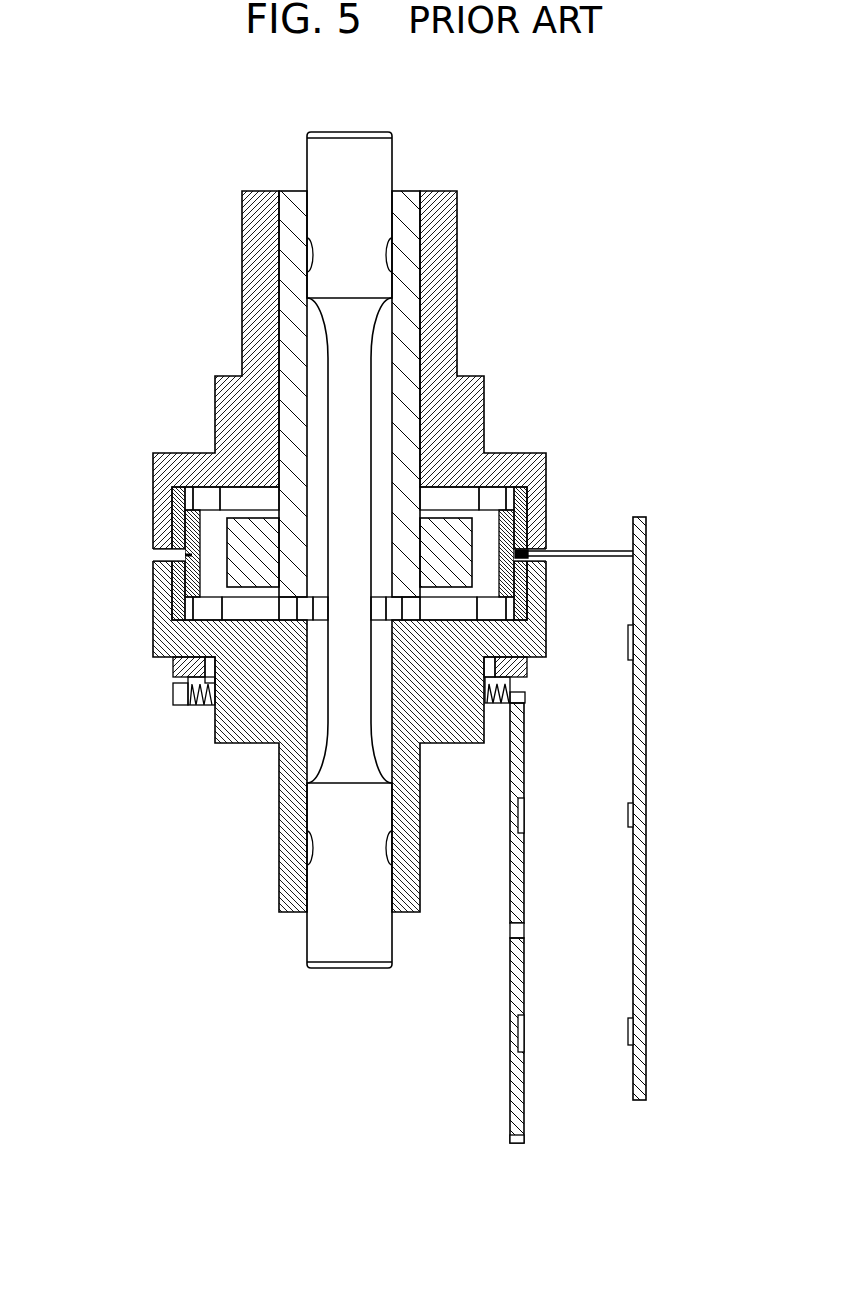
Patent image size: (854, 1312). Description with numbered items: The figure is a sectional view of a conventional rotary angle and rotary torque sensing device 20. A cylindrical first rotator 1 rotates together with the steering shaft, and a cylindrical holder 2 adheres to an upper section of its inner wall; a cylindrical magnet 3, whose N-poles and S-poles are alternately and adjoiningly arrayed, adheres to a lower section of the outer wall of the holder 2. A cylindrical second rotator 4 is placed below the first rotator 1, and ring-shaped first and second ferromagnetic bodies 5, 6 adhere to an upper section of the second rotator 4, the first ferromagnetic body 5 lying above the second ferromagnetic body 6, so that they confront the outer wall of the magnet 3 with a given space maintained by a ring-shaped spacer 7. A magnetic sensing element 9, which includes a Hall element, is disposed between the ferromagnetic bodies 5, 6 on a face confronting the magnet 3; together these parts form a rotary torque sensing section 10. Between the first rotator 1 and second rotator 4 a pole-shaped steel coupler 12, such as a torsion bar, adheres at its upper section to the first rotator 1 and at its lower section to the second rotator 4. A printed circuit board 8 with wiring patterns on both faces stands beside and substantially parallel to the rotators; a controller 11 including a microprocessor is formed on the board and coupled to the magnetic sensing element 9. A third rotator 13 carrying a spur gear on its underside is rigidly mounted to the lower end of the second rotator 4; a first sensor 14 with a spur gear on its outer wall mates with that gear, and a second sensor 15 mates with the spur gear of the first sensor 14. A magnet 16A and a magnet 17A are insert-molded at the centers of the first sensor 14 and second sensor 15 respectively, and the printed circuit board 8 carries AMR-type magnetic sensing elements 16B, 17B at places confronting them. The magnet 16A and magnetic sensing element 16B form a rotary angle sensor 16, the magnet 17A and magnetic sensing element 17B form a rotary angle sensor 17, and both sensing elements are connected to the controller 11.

The first rotator 1 is at (438, 255).
The holder 2 is at (407, 330).
The magnet 3 is at (460, 543).
The second rotator 4 is at (165, 641).
The first ferromagnetic body 5 is at (190, 493).
The second ferromagnetic body 6 is at (207, 600).
The spacer 7 is at (183, 555).
The printed circuit board 8 is at (647, 575).
The magnetic sensing element 9 is at (525, 553).
The rotary torque sensing section 10 is at (682, 347).
The controller 11 is at (647, 637).
The coupler 12 is at (345, 370).
The third rotator 13 is at (202, 706).
The first sensor 14 is at (510, 897).
The second sensor 15 is at (510, 1092).
The rotary angle sensor 16 is at (649, 838).
The magnet 16A is at (521, 820).
The magnetic sensing element 16B is at (640, 818).
The rotary angle sensor 17 is at (649, 1042).
The magnet 17A is at (521, 1038).
The magnetic sensing element 17B is at (640, 1030).
The rotary angle and rotary torque sensing device 20 is at (727, 1227).